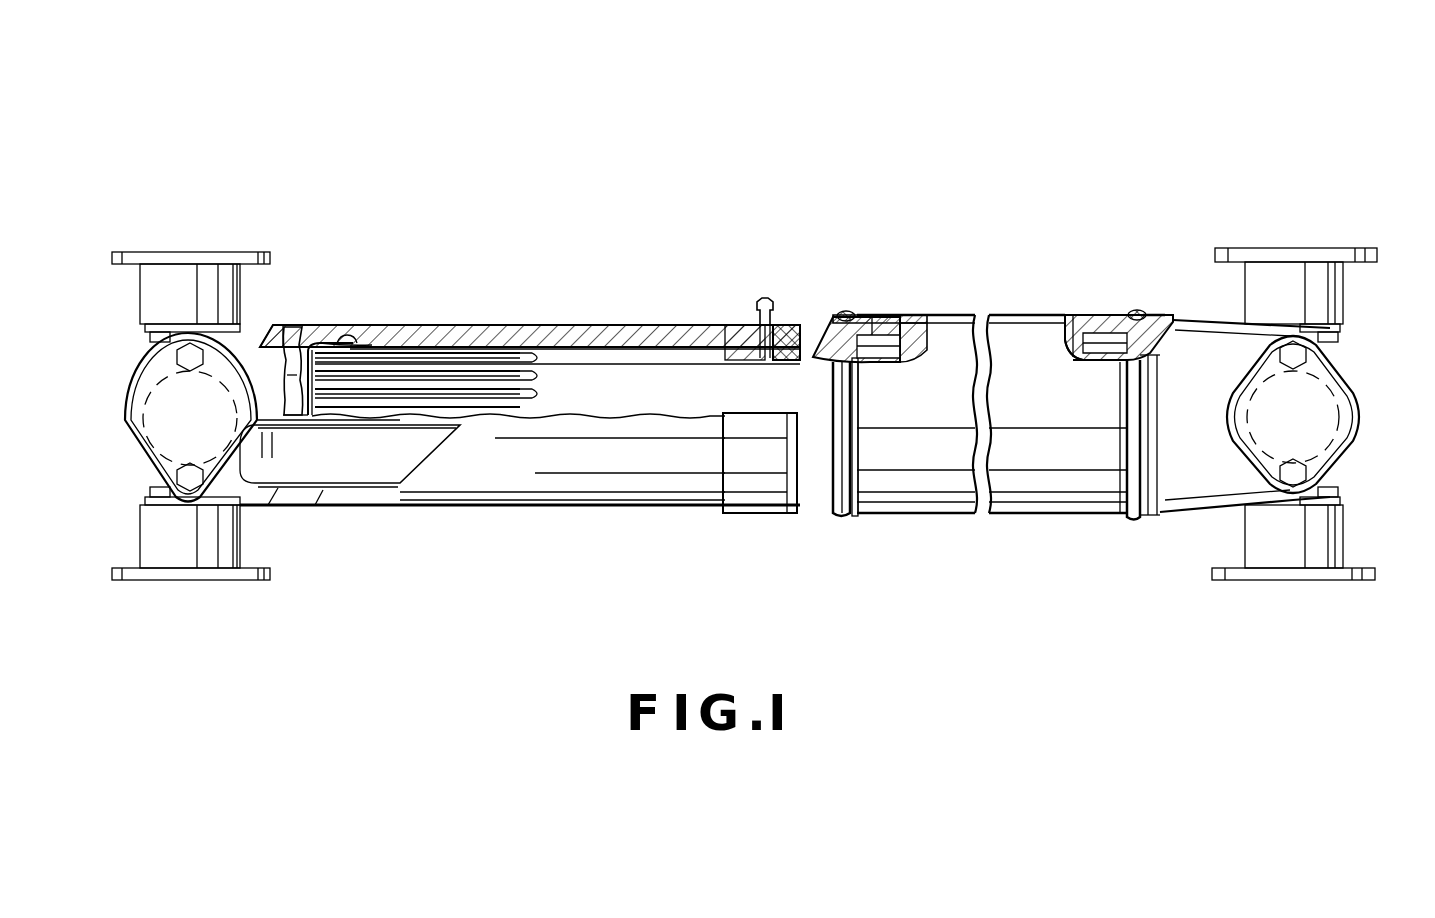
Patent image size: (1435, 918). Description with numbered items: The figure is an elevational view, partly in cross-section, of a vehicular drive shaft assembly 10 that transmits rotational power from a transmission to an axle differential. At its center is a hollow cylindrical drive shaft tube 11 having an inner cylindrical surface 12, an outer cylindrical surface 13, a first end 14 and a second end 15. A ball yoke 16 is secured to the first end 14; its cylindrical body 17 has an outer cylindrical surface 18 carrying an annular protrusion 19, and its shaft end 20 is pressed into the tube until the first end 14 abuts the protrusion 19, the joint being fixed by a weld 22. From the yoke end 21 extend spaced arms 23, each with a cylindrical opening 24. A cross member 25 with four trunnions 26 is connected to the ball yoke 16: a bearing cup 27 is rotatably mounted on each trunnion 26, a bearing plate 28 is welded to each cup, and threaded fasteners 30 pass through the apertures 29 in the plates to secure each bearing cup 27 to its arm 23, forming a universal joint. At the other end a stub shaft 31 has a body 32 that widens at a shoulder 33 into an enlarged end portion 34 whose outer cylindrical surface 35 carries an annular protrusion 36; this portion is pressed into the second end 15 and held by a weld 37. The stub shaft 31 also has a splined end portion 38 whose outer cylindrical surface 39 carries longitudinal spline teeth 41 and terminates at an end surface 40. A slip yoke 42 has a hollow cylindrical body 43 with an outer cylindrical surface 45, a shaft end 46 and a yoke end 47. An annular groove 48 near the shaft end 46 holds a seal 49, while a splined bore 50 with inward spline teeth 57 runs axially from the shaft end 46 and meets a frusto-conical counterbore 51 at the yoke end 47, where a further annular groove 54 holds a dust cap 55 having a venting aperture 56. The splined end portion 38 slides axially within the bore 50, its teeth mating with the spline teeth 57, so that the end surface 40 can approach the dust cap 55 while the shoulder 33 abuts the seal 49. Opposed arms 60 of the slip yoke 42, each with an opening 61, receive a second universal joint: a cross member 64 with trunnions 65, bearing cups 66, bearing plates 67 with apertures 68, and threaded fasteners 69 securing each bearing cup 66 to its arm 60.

The drive shaft assembly 10 is at (368, 116).
The drive shaft tube 11 is at (946, 404).
The inner cylindrical surface 12 is at (1063, 330).
The outer cylindrical surface 13 is at (869, 370).
The first end 14 is at (1125, 480).
The second end 15 is at (855, 470).
The ball yoke 16 is at (1158, 517).
The body 17 is at (1219, 422).
The outer cylindrical surface 18 is at (1197, 322).
The annular protrusion 19 is at (1148, 316).
The shaft end 20 is at (1085, 320).
The yoke end 21 is at (1222, 398).
The weld 22 is at (1135, 315).
The arms 23 is at (1242, 342).
The opening 24 is at (1328, 415).
The cross member 25 is at (1323, 421).
The trunnions 26 is at (1345, 340).
The bearing cup 27 is at (1330, 270).
The bearing plate 28 is at (1275, 250).
The apertures 29 is at (1300, 370).
The threaded fasteners 30 is at (1293, 355).
The stub shaft 31 is at (658, 404).
The body 32 is at (620, 407).
The shoulder 33 is at (825, 470).
The enlarged end portion 34 is at (872, 322).
The outer cylindrical surface 35 is at (890, 320).
The annular protrusion 36 is at (835, 330).
The weld 37 is at (848, 314).
The splined end portion 38 is at (468, 405).
The outer cylindrical surface 39 is at (462, 345).
The end surface 40 is at (312, 405).
The spline teeth 41 is at (500, 380).
The slip yoke 42 is at (534, 427).
The body 43 is at (563, 485).
The outer cylindrical surface 45 is at (640, 508).
The shaft end 46 is at (750, 350).
The yoke end 47 is at (282, 332).
The annular groove 48 is at (740, 330).
The seal 49 is at (755, 318).
The bore 50 is at (620, 325).
The counterbore 51 is at (372, 345).
The annular groove 54 is at (345, 334).
The dust cap 55 is at (305, 330).
The aperture 56 is at (283, 398).
The spline teeth 57 is at (563, 356).
The arms 60 is at (250, 494).
The opening 61 is at (166, 420).
The cross member 64 is at (170, 418).
The trunnions 65 is at (150, 347).
The bearing cup 66 is at (155, 278).
The bearing plate 67 is at (205, 253).
The apertures 68 is at (192, 372).
The threaded fasteners 69 is at (187, 463).